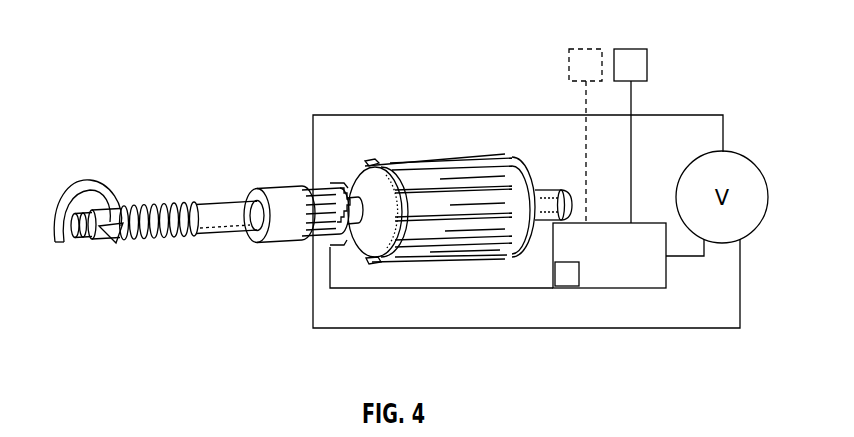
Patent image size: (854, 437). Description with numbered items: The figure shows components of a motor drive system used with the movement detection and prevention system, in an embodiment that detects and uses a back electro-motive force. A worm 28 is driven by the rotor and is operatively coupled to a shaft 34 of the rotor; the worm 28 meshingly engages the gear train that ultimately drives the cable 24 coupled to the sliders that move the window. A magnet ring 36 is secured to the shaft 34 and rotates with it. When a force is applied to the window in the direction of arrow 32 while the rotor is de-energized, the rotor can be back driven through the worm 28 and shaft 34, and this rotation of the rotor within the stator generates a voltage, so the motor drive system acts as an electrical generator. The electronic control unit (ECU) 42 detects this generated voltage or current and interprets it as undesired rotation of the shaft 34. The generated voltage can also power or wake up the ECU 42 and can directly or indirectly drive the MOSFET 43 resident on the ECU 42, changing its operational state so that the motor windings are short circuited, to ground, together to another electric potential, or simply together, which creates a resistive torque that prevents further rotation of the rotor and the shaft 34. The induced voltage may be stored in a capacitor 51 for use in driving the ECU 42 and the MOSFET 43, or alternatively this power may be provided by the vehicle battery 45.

The cable 24 is at (390, 263).
The worm 28 is at (166, 237).
The arrow 32 is at (93, 180).
The shaft 34 is at (233, 213).
The magnet ring 36 is at (270, 246).
The electronic control unit (ECU) 42 is at (640, 285).
The MOSFET 43 is at (568, 275).
The vehicle battery 45 is at (640, 65).
The capacitor 51 is at (586, 47).